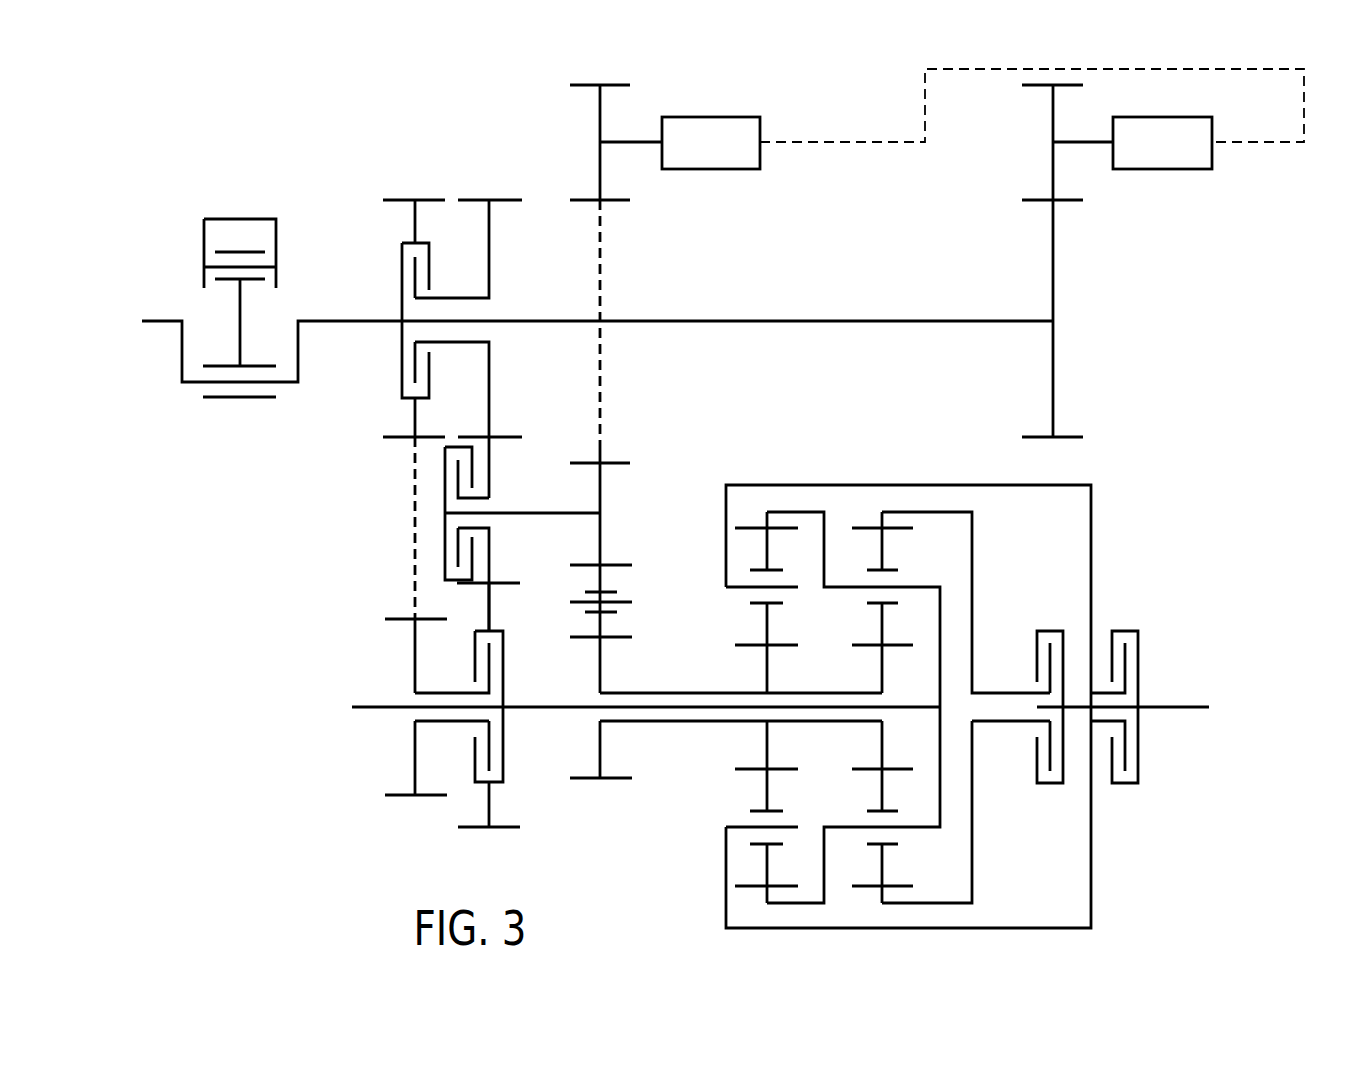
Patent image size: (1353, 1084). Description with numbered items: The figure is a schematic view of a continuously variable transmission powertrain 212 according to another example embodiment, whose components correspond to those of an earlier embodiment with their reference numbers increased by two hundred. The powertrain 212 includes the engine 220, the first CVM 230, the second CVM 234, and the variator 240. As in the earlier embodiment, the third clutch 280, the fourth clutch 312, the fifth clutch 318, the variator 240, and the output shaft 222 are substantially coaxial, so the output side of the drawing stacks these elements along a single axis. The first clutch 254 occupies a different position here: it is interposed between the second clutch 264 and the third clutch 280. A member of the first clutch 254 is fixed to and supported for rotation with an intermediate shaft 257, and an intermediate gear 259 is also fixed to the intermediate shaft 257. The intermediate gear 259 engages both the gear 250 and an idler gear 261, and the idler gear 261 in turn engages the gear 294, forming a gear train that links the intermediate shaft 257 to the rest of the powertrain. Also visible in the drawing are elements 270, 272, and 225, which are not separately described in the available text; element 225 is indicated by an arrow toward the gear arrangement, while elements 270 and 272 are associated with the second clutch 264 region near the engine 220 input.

The powertrain 212 is at (295, 135).
The engine 220 is at (217, 203).
The second clutch 264 is at (407, 319).
The clutch input member 270 is at (414, 218).
The clutch output member 272 is at (490, 218).
The first clutch 254 is at (432, 481).
The intermediate shaft 257 is at (540, 513).
The gear 250 is at (600, 120).
The second CVM 234 is at (710, 118).
The first CVM 230 is at (1163, 117).
The intermediate gear 259 is at (600, 487).
The idler gear 261 is at (602, 578).
The gear 294 is at (600, 672).
The third clutch 280 is at (510, 643).
The transmission gear set 225 is at (295, 617).
The output shaft 222 is at (1180, 708).
The variator 240 is at (693, 937).
The fifth clutch 318 is at (1042, 617).
The fourth clutch 312 is at (1124, 617).